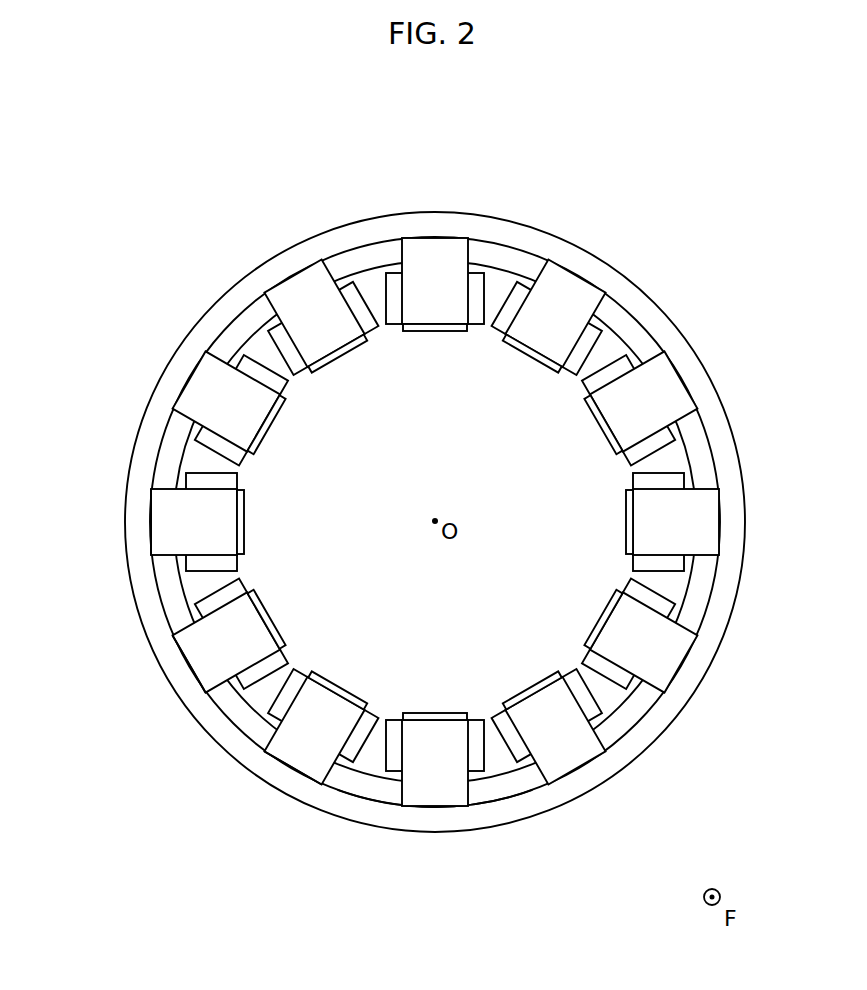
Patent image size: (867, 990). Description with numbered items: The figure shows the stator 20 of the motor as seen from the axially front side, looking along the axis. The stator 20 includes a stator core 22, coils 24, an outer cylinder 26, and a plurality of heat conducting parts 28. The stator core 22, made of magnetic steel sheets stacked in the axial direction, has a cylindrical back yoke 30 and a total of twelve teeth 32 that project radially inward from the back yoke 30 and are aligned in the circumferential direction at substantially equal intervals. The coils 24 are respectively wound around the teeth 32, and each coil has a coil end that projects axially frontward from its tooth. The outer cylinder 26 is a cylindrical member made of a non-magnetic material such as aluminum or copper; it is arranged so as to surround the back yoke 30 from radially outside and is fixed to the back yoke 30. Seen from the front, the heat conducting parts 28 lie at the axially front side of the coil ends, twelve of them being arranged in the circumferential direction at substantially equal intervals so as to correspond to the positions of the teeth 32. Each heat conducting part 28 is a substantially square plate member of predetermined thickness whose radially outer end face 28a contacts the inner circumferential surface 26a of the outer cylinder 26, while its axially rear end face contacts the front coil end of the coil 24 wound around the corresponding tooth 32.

The stator 20 is at (657, 121).
The stator core 22 is at (512, 241).
The coils 24 is at (397, 278).
The outer cylinder 26 is at (150, 447).
The inner circumferential surface 26a is at (378, 792).
The heat conducting parts 28 is at (333, 697).
The radially outer end face 28a is at (150, 521).
The back yoke 30 is at (242, 323).
The teeth 32 is at (433, 330).